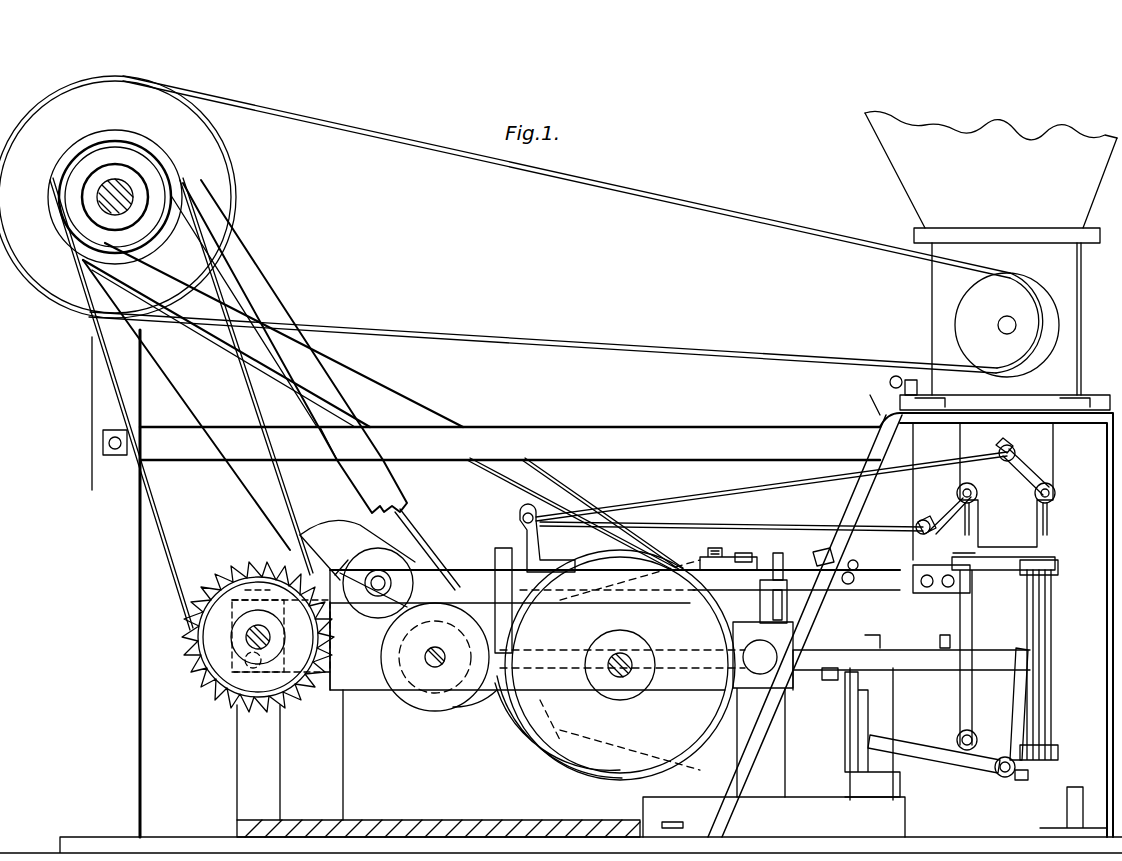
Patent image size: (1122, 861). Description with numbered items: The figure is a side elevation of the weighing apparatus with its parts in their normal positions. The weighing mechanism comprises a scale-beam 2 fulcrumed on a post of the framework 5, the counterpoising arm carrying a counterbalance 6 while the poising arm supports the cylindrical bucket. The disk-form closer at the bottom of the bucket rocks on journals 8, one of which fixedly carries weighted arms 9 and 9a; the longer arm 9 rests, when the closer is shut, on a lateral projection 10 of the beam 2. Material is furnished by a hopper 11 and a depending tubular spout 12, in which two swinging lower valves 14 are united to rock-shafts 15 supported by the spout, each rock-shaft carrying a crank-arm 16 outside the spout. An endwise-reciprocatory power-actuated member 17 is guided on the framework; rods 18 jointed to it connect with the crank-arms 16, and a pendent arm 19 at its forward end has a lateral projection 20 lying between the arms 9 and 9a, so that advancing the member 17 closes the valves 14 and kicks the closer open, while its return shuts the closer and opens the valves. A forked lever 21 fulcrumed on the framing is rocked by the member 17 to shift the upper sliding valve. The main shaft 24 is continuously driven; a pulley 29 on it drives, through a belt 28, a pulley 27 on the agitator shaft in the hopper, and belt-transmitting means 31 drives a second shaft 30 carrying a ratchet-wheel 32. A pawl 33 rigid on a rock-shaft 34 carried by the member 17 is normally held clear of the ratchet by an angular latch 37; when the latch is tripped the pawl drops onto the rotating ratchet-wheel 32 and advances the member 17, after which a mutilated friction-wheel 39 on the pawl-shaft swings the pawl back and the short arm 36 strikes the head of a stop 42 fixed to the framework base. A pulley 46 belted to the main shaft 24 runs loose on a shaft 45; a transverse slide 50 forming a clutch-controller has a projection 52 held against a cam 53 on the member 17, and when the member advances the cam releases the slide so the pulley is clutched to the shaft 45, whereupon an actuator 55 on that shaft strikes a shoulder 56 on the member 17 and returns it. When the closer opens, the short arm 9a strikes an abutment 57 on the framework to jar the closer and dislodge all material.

The scale-beam 2 is at (908, 660).
The framework 5 is at (561, 737).
The counterbalance 6 is at (478, 712).
The journals 8 is at (998, 776).
The long weighted arm 9 is at (920, 755).
The short weighted arm 9a is at (1030, 702).
The lateral projection 10 is at (848, 768).
The hopper 11 is at (932, 300).
The tubular spout 12 is at (1015, 452).
The lower valves 14 is at (1049, 528).
The rock-shafts 15 is at (1056, 494).
The crank-arm 16 is at (1038, 480).
The endwise-reciprocatory power-actuated member 17 is at (370, 376).
The rods 18 is at (700, 489).
The pendent arm 19 is at (968, 632).
The lateral projection 20 is at (962, 734).
The lever 21 is at (853, 475).
The main shaft 24 is at (96, 197).
The pulley 27 is at (1007, 325).
The belt 28 is at (545, 172).
The pulley 29 is at (222, 165).
The second shaft 30 is at (252, 642).
The belt-transmitting means 31 is at (85, 336).
The ratchet-wheel 32 is at (258, 629).
The pawl 33 is at (335, 530).
The rock-shaft 34 is at (425, 657).
The arm 36 is at (440, 552).
The angular latch 37 is at (248, 598).
The mutilated friction-wheel 39 is at (377, 560).
The stop 42 is at (500, 560).
The shaft 45 is at (636, 672).
The driven member 46 is at (620, 665).
The slide 50 is at (782, 607).
The projection 52 is at (783, 548).
The cam 53 is at (756, 557).
The actuator 55 is at (580, 733).
The shoulder 56 is at (556, 578).
The abutment 57 is at (1067, 805).